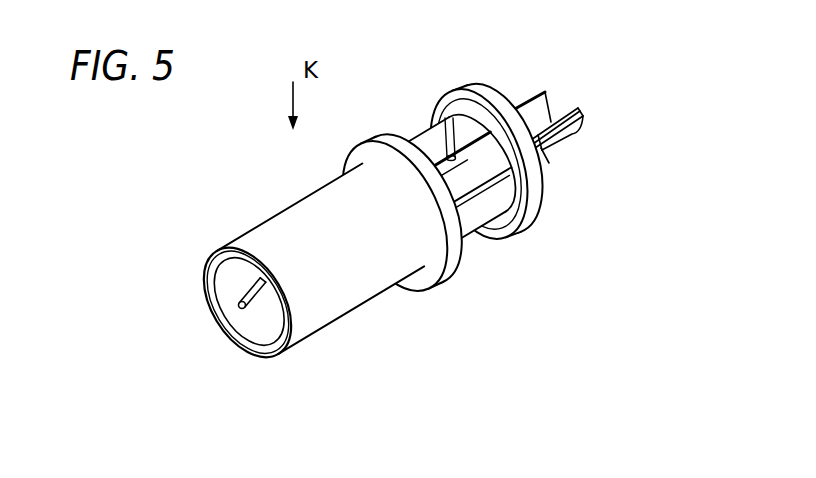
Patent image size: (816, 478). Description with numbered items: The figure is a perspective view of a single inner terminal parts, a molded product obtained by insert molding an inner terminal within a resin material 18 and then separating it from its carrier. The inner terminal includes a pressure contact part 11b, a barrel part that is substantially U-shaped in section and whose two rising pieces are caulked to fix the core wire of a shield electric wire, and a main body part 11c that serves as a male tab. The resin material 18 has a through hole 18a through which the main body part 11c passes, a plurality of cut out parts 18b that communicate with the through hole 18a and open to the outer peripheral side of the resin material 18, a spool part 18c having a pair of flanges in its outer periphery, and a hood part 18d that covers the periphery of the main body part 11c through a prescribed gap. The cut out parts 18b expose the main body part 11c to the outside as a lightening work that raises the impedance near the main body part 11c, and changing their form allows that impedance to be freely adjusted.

The pressure contact part 11b is at (576, 128).
The main body part 11c is at (266, 298).
The resin material 18 is at (410, 215).
The through hole 18a is at (454, 156).
The cut out parts 18b is at (421, 146).
The spool part 18c is at (484, 141).
The hood part 18d is at (299, 222).